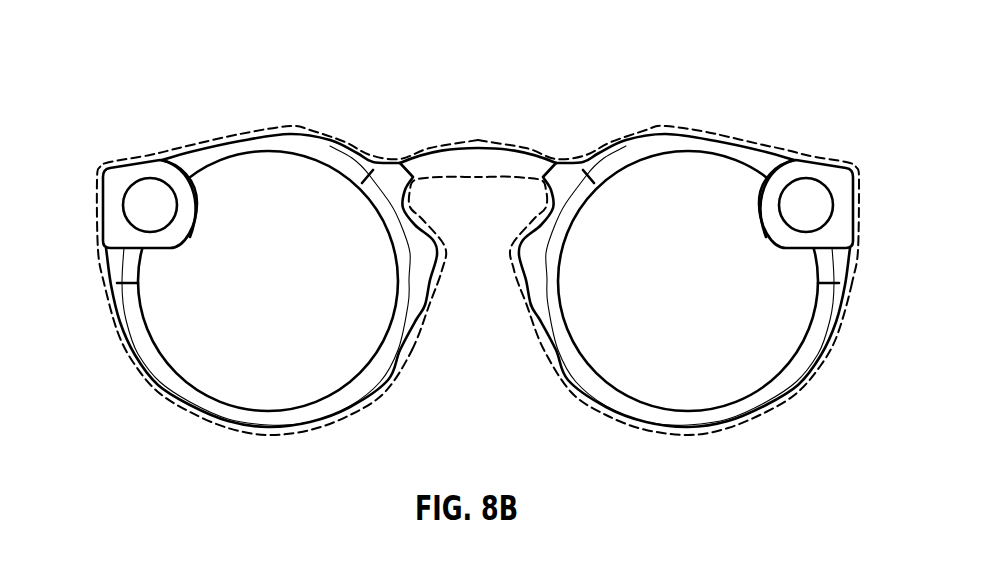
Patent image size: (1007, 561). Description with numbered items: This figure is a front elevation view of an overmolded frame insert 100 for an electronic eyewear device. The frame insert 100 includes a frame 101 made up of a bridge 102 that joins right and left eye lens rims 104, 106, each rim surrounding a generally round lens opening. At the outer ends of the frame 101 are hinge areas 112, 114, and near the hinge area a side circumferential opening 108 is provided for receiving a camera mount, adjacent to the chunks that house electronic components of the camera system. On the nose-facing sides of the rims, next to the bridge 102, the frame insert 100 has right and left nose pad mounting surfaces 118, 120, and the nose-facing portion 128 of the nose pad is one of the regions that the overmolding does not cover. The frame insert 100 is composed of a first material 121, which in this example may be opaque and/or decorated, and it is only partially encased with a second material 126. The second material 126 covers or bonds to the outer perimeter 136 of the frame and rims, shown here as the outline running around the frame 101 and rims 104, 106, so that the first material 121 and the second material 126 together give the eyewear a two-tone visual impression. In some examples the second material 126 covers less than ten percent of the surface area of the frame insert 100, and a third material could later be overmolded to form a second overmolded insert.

The frame insert 100 is at (501, 56).
The frame 101 is at (283, 108).
The bridge 102 is at (521, 160).
The right eye lens rim 104 is at (116, 283).
The left eye lens rim 106 is at (717, 151).
The right side circumferential opening 108 is at (844, 188).
The hinge area 112 is at (130, 138).
The hinge area 114 is at (861, 223).
The right nose pad mounting surface 118 is at (531, 256).
The left nose pad mounting surface 120 is at (358, 373).
The first material 121 is at (823, 267).
The second material 126 is at (841, 303).
The nose-facing portion 128 is at (440, 304).
The outer perimeter 136 is at (841, 163).